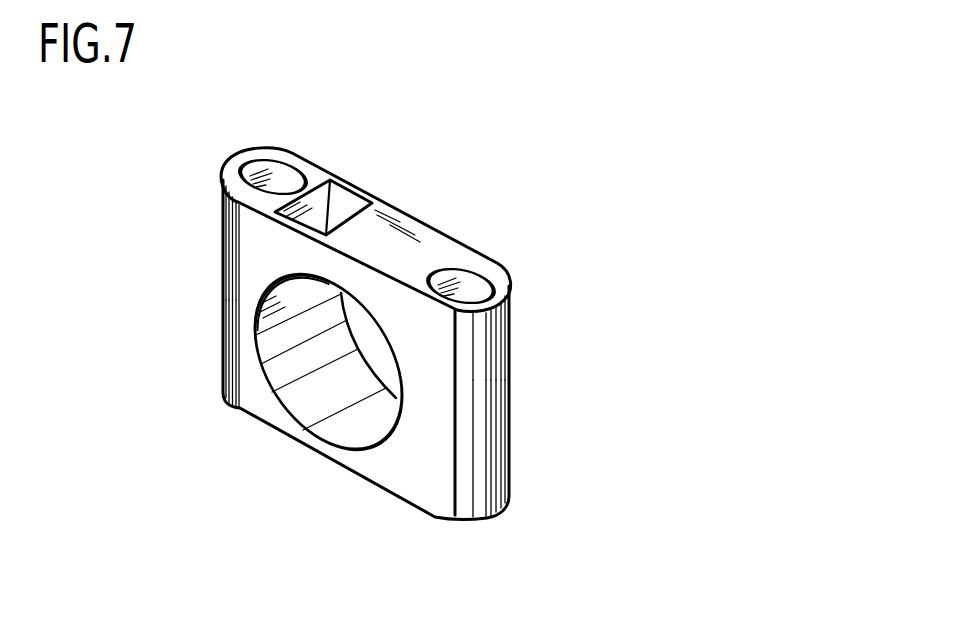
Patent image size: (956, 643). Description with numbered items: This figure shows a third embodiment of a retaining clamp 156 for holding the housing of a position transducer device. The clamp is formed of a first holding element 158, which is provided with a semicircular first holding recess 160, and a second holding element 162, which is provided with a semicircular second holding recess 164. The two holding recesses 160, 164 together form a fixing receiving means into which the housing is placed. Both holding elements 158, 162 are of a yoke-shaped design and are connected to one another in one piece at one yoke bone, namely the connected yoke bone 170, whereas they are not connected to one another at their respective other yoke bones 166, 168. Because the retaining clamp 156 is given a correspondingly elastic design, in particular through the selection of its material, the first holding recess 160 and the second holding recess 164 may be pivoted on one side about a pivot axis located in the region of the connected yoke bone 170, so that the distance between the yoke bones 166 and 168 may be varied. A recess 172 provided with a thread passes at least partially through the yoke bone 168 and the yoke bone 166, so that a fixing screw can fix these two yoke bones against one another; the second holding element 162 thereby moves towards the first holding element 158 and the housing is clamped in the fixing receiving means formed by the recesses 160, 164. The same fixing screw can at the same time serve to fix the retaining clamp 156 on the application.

The retaining clamp 156 is at (516, 249).
The first holding element 158 is at (288, 438).
The first holding recess 160 is at (282, 375).
The second holding element 162 is at (486, 345).
The second holding recess 164 is at (341, 331).
The yoke bone 166 is at (242, 337).
The yoke bone 168 is at (240, 244).
The connected yoke bone 170 is at (488, 401).
The recess 172 is at (285, 177).